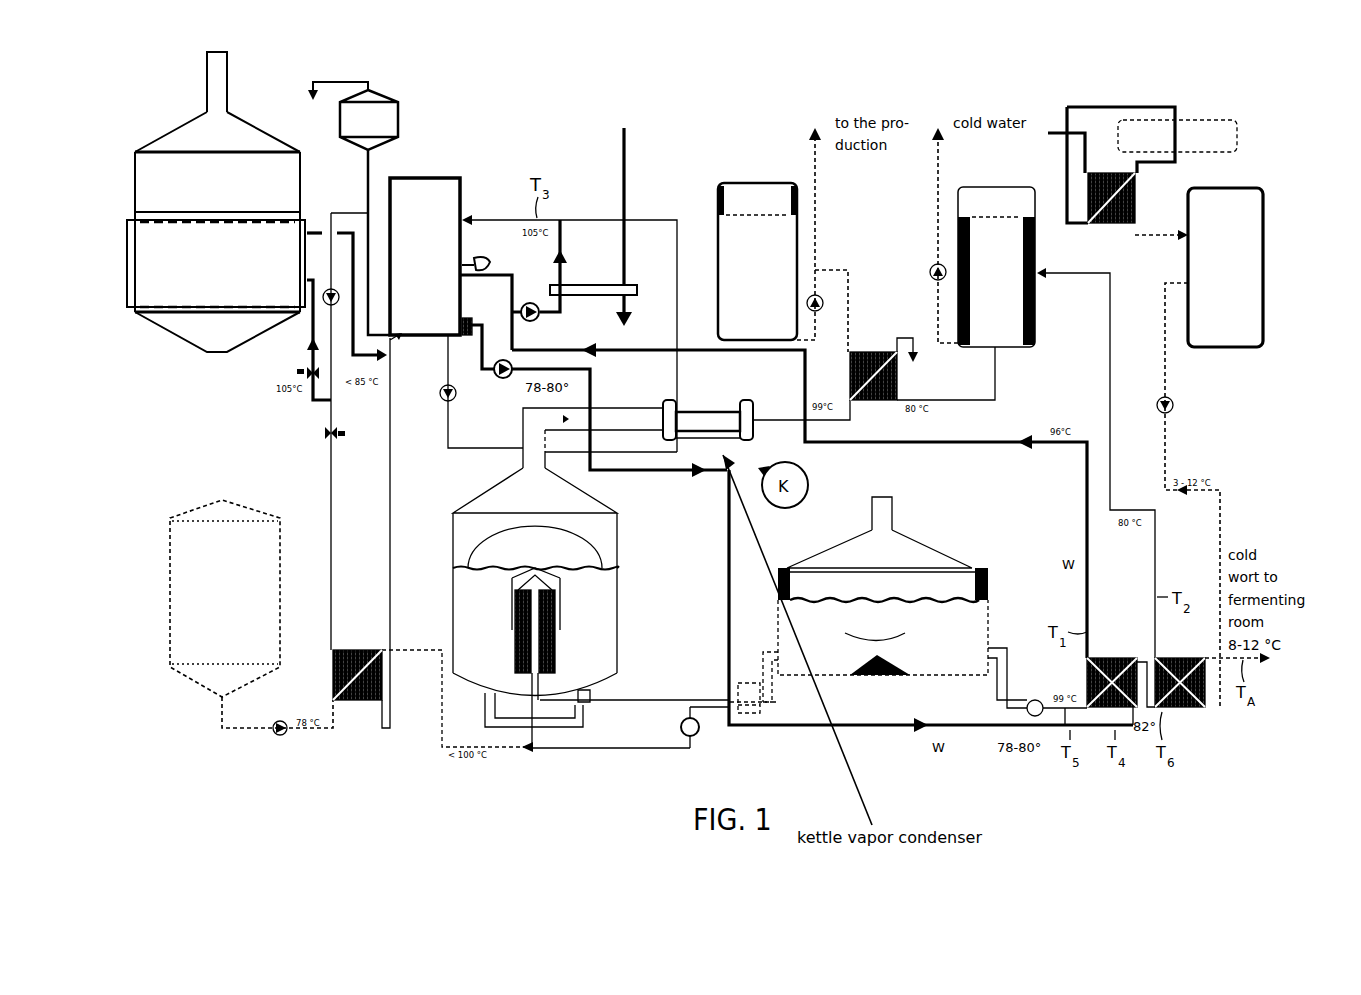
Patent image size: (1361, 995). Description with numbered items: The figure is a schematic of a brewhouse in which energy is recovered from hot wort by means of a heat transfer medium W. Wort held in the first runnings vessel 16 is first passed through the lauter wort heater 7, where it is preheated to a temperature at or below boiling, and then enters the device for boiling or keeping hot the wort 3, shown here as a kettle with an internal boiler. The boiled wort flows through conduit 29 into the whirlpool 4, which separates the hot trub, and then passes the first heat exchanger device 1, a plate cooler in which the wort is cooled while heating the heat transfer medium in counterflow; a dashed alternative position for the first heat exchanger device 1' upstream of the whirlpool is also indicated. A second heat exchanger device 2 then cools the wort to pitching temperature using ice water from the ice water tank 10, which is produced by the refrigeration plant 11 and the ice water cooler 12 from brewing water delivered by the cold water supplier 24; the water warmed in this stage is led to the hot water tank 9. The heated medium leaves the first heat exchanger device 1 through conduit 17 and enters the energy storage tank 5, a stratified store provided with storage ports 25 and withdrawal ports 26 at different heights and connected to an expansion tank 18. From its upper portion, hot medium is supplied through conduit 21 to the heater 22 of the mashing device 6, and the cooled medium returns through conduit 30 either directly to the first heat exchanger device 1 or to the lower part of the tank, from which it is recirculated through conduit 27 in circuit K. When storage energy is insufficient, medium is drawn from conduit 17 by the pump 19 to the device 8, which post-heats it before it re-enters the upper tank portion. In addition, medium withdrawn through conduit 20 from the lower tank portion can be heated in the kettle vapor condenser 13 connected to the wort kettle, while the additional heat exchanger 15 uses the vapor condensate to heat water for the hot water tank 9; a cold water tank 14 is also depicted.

The first heat exchanger device 1 is at (1112, 664).
The first heat exchanger device (alternative position) 1' is at (749, 676).
The second heat exchanger device 2 is at (1180, 658).
The device for boiling or keeping hot the wort 3 is at (618, 620).
The whirlpool 4 is at (960, 560).
The energy storage tank 5 is at (462, 182).
The mashing device 6 is at (265, 135).
The lauter wort heater 7 is at (355, 704).
The device for additionally heating the heat transfer medium 8 is at (592, 285).
The hot water tank or brewing water tank 9 is at (1037, 252).
The ice water tank 10 is at (1225, 350).
The refrigeration plant 11 is at (1228, 120).
The ice water cooler 12 is at (1110, 225).
The kettle vapor condenser 13 is at (721, 400).
The cold water tank 14 is at (716, 192).
The additional heat exchanger 15 is at (875, 403).
The first runnings vessel 16 is at (170, 560).
The conduit 17 is at (1090, 556).
The expansion tank 18 is at (400, 107).
The pump 19 is at (529, 303).
The conduit 20 is at (672, 218).
The conduit 21 is at (347, 213).
The heater 22 is at (127, 268).
The cold water supplier 24 is at (1050, 131).
The storage ports 25 is at (489, 252).
The withdrawal ports 26 is at (470, 345).
The conduit 27 is at (732, 540).
The conduit 29 is at (777, 703).
The conduit 30 is at (318, 230).